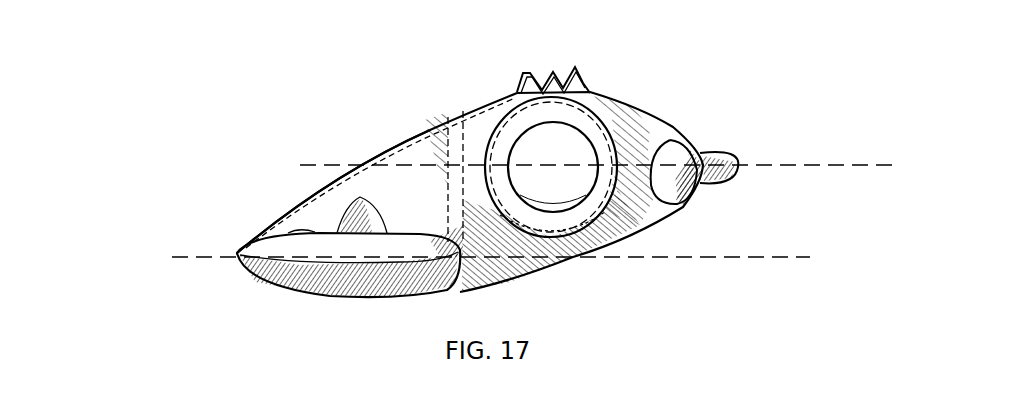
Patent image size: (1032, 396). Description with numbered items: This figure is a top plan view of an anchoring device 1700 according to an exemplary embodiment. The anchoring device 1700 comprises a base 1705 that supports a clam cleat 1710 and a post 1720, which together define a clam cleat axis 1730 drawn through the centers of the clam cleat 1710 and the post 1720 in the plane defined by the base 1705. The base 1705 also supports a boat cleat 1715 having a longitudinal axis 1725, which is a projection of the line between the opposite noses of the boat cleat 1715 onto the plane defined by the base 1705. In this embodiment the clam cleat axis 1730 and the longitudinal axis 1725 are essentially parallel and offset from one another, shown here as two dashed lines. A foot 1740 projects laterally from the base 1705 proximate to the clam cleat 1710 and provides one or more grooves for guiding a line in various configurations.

The anchoring device 1700 is at (227, 118).
The base 1705 is at (277, 215).
The clam cleat 1710 is at (570, 137).
The boat cleat 1715 is at (333, 293).
The post 1720 is at (680, 148).
The longitudinal axis 1725 is at (215, 258).
The clam cleat axis 1730 is at (775, 167).
The foot 1740 is at (536, 70).